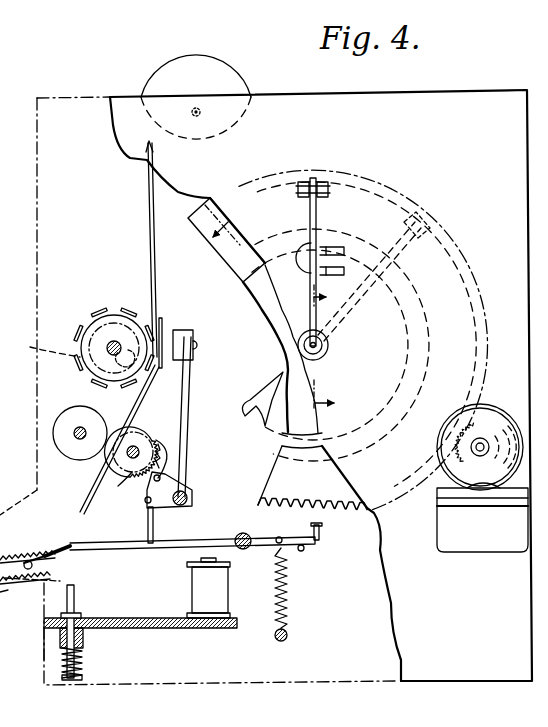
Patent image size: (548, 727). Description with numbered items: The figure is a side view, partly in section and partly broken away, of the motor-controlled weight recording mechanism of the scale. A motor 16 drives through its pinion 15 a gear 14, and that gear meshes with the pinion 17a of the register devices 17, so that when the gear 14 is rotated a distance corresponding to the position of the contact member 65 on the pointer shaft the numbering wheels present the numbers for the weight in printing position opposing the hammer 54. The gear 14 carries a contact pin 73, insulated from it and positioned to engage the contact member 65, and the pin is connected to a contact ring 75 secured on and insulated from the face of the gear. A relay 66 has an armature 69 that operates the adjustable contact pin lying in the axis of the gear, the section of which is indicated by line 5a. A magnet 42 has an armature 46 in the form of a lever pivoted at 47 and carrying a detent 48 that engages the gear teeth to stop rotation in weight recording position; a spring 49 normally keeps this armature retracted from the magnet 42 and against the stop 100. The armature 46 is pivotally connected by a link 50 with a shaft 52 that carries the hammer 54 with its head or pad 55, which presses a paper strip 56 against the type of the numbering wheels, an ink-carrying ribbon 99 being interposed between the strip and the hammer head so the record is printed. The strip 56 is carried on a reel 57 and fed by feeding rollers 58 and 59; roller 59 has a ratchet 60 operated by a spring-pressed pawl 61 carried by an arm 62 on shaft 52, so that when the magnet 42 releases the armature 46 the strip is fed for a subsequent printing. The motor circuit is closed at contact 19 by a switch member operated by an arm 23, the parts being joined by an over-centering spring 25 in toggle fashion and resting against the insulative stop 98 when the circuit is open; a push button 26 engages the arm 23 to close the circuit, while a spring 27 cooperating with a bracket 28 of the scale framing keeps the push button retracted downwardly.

The reel 57 is at (175, 68).
The contact pin 73 is at (366, 175).
The contact member 65 is at (356, 306).
The armature 69 is at (318, 222).
The section line 5a is at (333, 343).
The contact ring 75 is at (243, 257).
The gear 14 is at (312, 495).
The relay 66 is at (254, 308).
The paper strip 56 is at (156, 264).
The ink-carrying ribbon 99 is at (162, 326).
The register devices 17 is at (102, 314).
The pinion 17a is at (42, 342).
The feeding roller 58 is at (77, 412).
The feeding roller 59 is at (126, 430).
The spring-pressed pawl 61 is at (163, 441).
The ratchet 60 is at (116, 488).
The head or pad 55 is at (191, 332).
The hammer 54 is at (190, 410).
The arm 62 is at (163, 504).
The shaft 52 is at (188, 494).
The link 50 is at (147, 524).
The armature 46 is at (174, 548).
The arm 23 is at (68, 561).
The over-centering spring 25 is at (30, 560).
The contact 19 is at (27, 547).
The insulative stop 98 is at (17, 598).
The pivot 47 is at (241, 532).
The detent 48 is at (322, 537).
The stop 100 is at (304, 551).
The spring 49 is at (290, 593).
The magnet 42 is at (215, 586).
The bracket 28 is at (148, 630).
The spring 27 is at (82, 658).
The push button 26 is at (74, 681).
The motor 16 is at (455, 466).
The pinion 15 is at (485, 432).